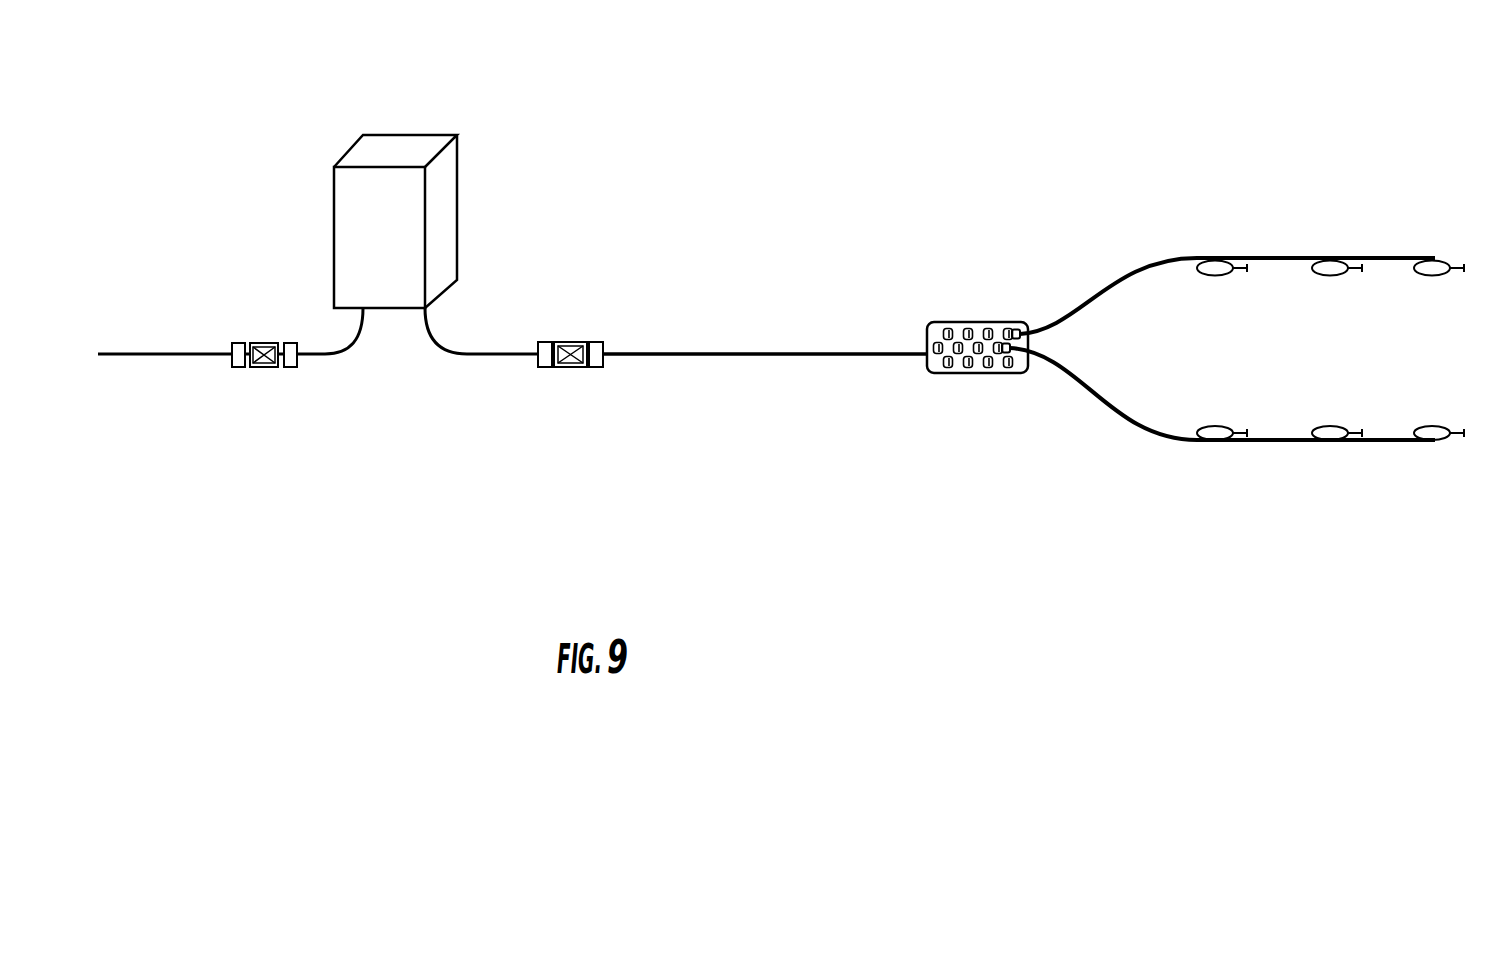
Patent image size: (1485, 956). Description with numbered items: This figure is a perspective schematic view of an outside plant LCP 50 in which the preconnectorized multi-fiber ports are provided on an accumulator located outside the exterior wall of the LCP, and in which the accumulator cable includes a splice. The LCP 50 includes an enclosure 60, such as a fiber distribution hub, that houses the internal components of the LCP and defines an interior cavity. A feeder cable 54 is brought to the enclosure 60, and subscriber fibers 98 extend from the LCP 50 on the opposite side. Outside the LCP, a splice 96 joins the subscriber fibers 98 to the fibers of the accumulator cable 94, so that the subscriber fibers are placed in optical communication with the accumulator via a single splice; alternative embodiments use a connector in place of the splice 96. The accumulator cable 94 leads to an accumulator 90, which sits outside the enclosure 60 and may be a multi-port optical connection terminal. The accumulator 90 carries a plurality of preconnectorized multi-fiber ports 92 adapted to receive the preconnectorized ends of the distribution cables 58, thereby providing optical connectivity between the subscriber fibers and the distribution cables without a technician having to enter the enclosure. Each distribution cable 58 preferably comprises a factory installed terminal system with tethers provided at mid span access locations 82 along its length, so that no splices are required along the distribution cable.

The outside plant LCP 50 is at (477, 210).
The enclosure 60 is at (387, 135).
The feeder cable 54 is at (328, 348).
The subscriber fibers 98 is at (459, 350).
The splice 96 is at (570, 341).
The accumulator cable 94 is at (712, 352).
The accumulator 90 is at (945, 322).
The preconnectorized multi-fiber ports 92 is at (993, 342).
The distribution cables 58 is at (1123, 282).
The mid span access locations 82 is at (1217, 276).